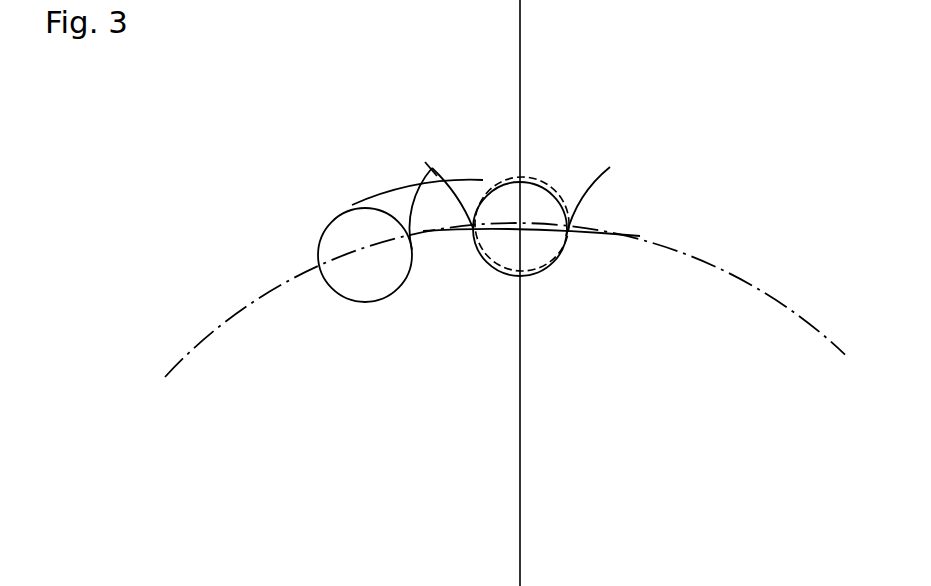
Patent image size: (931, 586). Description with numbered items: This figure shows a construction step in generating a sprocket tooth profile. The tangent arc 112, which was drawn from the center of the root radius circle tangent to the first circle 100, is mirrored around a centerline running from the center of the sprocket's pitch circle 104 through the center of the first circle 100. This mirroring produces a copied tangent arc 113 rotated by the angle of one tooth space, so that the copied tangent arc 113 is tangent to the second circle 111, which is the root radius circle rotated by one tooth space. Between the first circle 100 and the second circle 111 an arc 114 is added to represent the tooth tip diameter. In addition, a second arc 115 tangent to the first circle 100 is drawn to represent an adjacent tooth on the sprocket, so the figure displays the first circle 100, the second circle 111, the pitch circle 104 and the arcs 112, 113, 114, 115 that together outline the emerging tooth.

The first circle 100 is at (545, 270).
The pitch circle 104 is at (758, 290).
The second circle 111 is at (337, 295).
The tangent arc 112 is at (462, 198).
The copied tangent arc 113 is at (417, 202).
The arc 114 is at (419, 186).
The second arc 115 is at (568, 226).